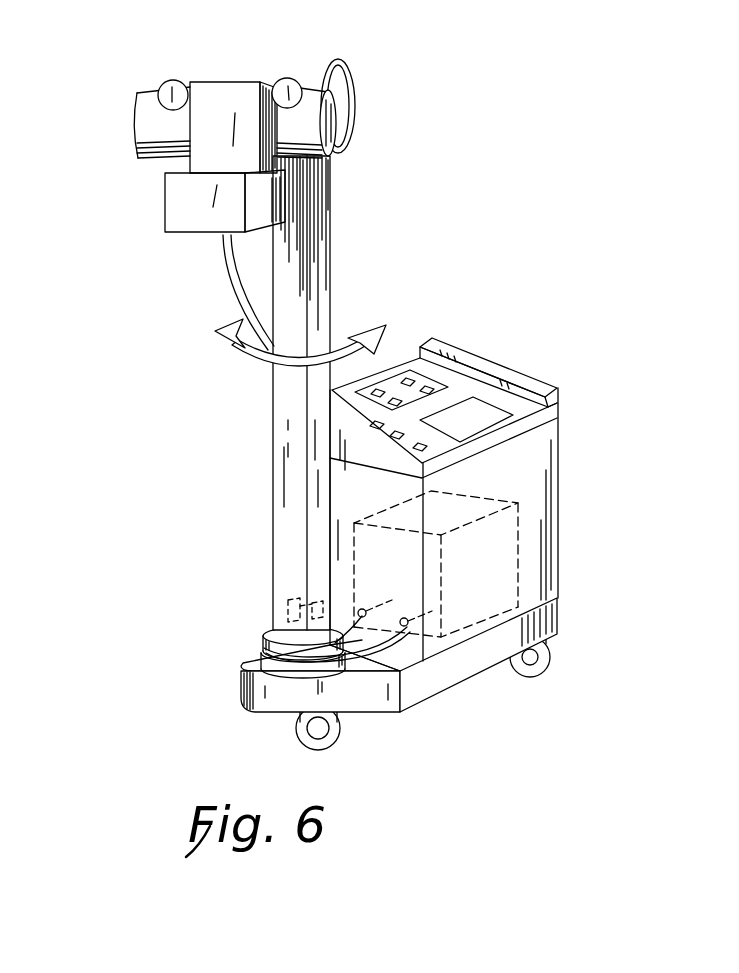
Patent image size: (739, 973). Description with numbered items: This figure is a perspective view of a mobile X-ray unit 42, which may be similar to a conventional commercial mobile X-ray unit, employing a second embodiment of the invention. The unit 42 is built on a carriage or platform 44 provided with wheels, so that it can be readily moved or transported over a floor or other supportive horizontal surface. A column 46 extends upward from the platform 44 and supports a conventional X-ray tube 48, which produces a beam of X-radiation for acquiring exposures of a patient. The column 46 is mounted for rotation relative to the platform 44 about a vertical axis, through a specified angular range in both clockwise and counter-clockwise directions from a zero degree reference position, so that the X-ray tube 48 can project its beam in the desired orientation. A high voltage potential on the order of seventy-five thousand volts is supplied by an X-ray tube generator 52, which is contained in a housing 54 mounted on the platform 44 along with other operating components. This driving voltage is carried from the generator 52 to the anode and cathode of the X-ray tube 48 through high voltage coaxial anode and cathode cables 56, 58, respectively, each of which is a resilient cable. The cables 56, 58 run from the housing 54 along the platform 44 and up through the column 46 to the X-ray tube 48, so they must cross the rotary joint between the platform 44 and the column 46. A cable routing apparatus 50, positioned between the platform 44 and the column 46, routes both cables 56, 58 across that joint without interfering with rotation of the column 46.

The mobile X-ray unit 42 is at (148, 590).
The carriage or platform 44 is at (468, 658).
The column 46 is at (288, 396).
The X-ray tube 48 is at (247, 83).
The cable routing apparatus 50 is at (262, 650).
The X-ray tube generator 52 is at (520, 532).
The housing 54 is at (530, 444).
The anode cable 56 is at (262, 82).
The cathode cable 58 is at (356, 72).